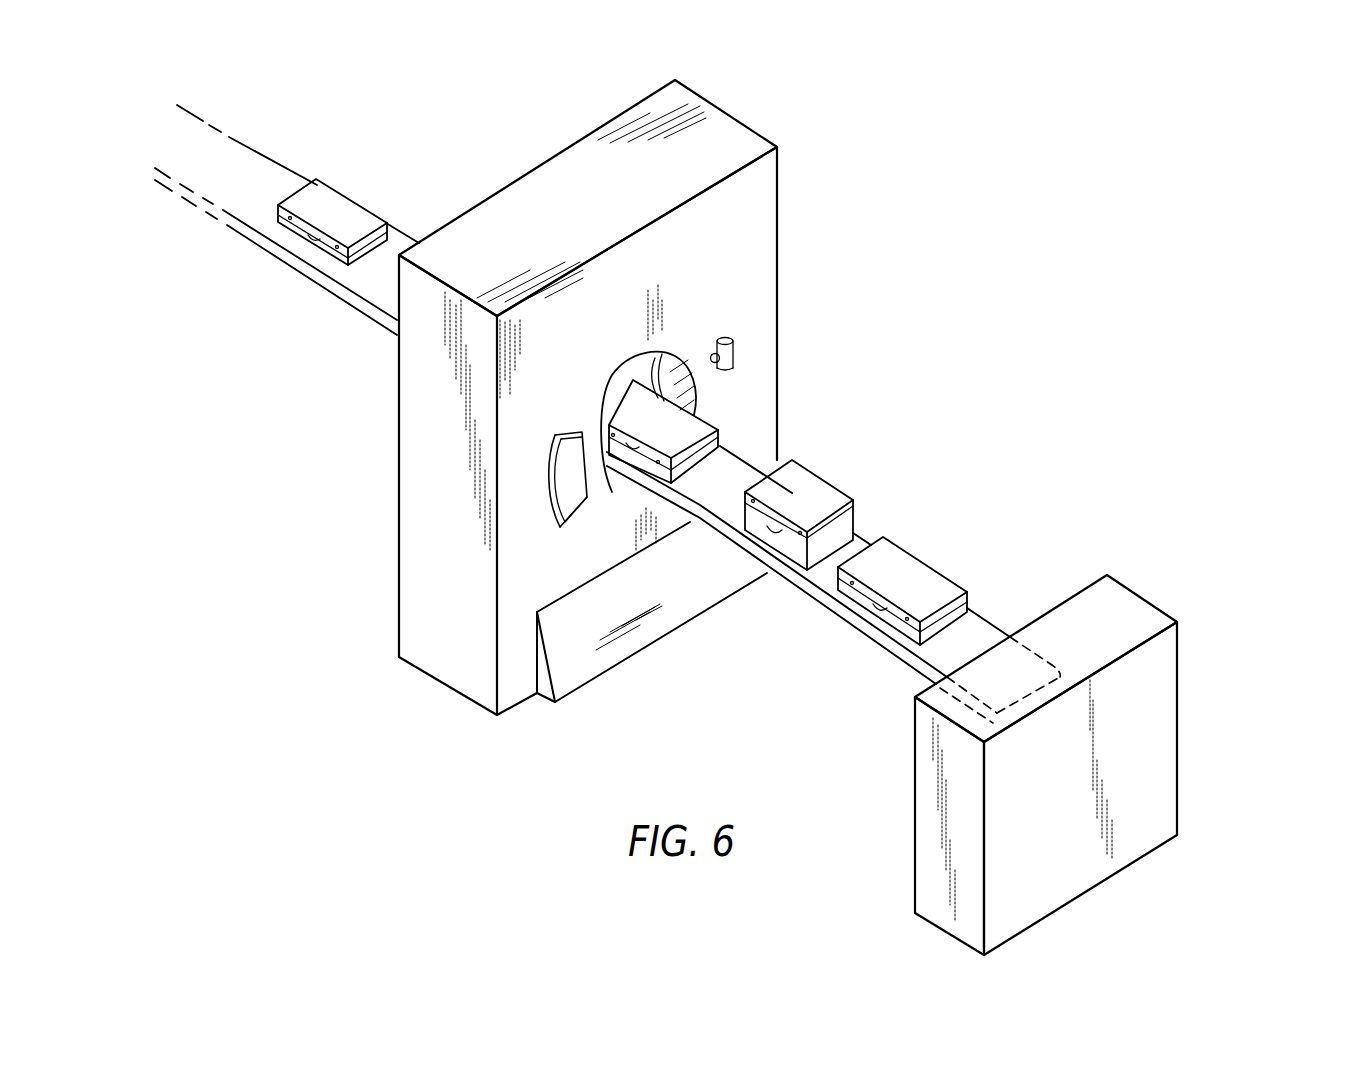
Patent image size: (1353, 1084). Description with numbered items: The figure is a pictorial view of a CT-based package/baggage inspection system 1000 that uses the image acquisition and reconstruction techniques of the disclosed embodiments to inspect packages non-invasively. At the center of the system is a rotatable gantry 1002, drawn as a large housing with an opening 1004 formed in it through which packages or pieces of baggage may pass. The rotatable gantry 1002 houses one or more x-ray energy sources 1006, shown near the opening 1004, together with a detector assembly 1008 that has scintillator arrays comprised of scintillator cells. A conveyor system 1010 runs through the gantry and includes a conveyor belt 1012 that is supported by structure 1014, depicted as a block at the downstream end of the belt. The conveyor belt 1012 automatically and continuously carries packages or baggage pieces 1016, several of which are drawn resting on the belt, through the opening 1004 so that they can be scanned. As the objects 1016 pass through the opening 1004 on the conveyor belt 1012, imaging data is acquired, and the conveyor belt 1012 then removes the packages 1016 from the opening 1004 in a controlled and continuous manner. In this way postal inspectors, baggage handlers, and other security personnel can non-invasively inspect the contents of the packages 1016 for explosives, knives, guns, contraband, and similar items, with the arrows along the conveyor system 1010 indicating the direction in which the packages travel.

The package/baggage inspection system 1000 is at (940, 406).
The rotatable gantry 1002 is at (732, 271).
The opening 1004 is at (677, 355).
The x-ray energy source 1006 is at (737, 358).
The detector assembly 1008 is at (573, 443).
The conveyor system 1010 is at (173, 215).
The conveyor belt 1012 is at (370, 283).
The structure 1014 is at (1162, 718).
The packages or baggage pieces 1016 is at (343, 207).